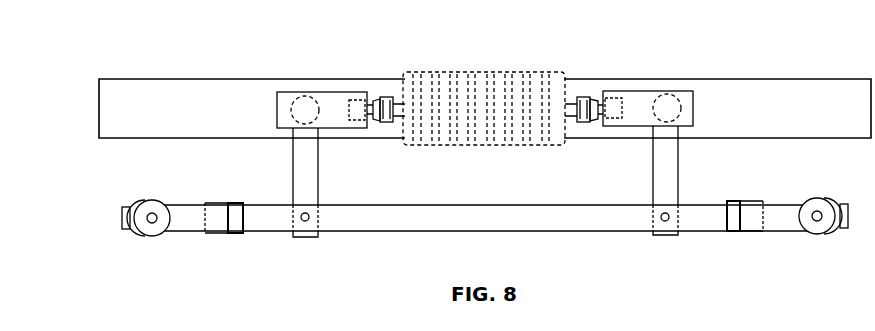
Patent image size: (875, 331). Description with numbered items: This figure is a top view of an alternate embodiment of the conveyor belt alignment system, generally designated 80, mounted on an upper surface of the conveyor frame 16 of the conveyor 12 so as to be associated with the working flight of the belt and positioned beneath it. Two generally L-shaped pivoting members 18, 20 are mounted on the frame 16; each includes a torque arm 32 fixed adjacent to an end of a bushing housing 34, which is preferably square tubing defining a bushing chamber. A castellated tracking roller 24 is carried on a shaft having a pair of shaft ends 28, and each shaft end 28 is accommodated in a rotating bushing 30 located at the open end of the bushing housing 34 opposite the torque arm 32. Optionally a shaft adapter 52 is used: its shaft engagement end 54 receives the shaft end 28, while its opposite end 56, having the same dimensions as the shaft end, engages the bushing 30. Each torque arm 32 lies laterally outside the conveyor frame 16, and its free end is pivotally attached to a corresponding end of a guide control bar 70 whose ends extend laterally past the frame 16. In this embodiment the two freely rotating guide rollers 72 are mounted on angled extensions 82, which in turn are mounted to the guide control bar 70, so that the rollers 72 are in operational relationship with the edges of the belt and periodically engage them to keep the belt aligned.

The conveyor 12 is at (505, 54).
The conveyor frame 16 is at (777, 89).
The pivoting member 18 is at (668, 80).
The pivoting member 20 is at (277, 104).
The tracking roller 24 is at (485, 72).
The shaft end 28 is at (400, 96).
The rotating bushing 30 is at (608, 82).
The torque arm 32 is at (302, 176).
The bushing housing 34 is at (337, 93).
The shaft adapter 52 is at (362, 100).
The shaft engagement end 54 is at (387, 124).
The opposite end 56 is at (357, 121).
The guide control bar 70 is at (345, 218).
The guide roller 72 is at (156, 233).
The alternate embodiment system 80 is at (668, 82).
The angled extension 82 is at (190, 222).